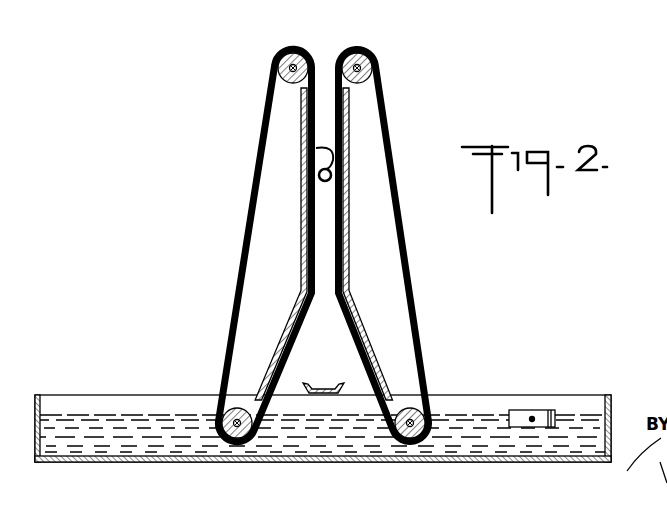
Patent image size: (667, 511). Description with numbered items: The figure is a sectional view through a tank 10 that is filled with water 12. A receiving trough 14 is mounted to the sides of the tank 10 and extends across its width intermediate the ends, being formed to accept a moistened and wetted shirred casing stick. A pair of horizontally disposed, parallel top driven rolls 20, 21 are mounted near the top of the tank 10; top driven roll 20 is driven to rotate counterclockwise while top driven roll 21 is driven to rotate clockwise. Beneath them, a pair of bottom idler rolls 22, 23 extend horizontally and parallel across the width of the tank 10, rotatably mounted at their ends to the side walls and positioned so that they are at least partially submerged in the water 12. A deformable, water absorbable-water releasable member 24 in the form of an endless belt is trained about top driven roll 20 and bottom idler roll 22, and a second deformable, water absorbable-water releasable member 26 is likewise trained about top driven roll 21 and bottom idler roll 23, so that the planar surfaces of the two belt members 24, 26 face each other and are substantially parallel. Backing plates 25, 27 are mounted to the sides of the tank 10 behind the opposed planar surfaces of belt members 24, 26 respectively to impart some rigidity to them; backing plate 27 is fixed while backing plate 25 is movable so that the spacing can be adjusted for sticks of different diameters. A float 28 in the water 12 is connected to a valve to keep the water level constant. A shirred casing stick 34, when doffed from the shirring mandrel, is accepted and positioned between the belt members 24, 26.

The tank 10 is at (612, 395).
The water 12 is at (578, 420).
The receiving trough 14 is at (323, 388).
The top driven roll 20 is at (359, 56).
The top driven roll 21 is at (294, 58).
The bottom idler roll 22 is at (411, 405).
The bottom idler roll 23 is at (243, 405).
The deformable water absorbable-water releasable member 24 is at (410, 166).
The backing plate 25 is at (351, 203).
The deformable water absorbable-water releasable member 26 is at (256, 141).
The backing plate 27 is at (300, 228).
The float 28 is at (533, 410).
The shirred casing stick 34 is at (305, 152).